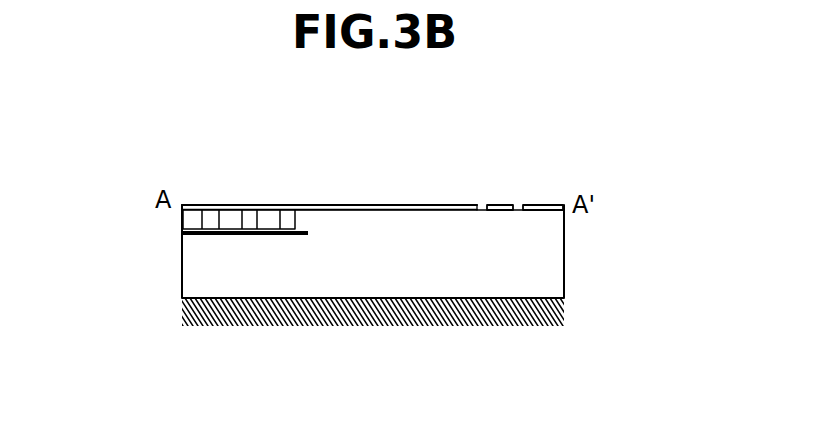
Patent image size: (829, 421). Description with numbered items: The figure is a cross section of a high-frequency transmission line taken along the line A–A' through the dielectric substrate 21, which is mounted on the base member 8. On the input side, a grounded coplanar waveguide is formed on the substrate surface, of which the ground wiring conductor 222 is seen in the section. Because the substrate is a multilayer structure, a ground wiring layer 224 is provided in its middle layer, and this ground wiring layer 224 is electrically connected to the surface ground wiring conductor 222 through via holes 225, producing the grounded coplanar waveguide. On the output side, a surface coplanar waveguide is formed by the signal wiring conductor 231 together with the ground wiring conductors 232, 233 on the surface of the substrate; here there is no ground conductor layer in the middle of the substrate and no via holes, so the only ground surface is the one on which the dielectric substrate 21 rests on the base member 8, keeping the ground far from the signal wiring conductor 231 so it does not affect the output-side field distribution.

The base member 8 is at (205, 314).
The dielectric substrate 21 is at (523, 263).
The ground wiring conductor 222 is at (310, 199).
The ground wiring layer 224 is at (213, 235).
The via hole 225 is at (200, 220).
The signal wiring conductor 231 is at (499, 205).
The ground wiring conductor 232 is at (478, 198).
The ground wiring conductor 233 is at (558, 205).